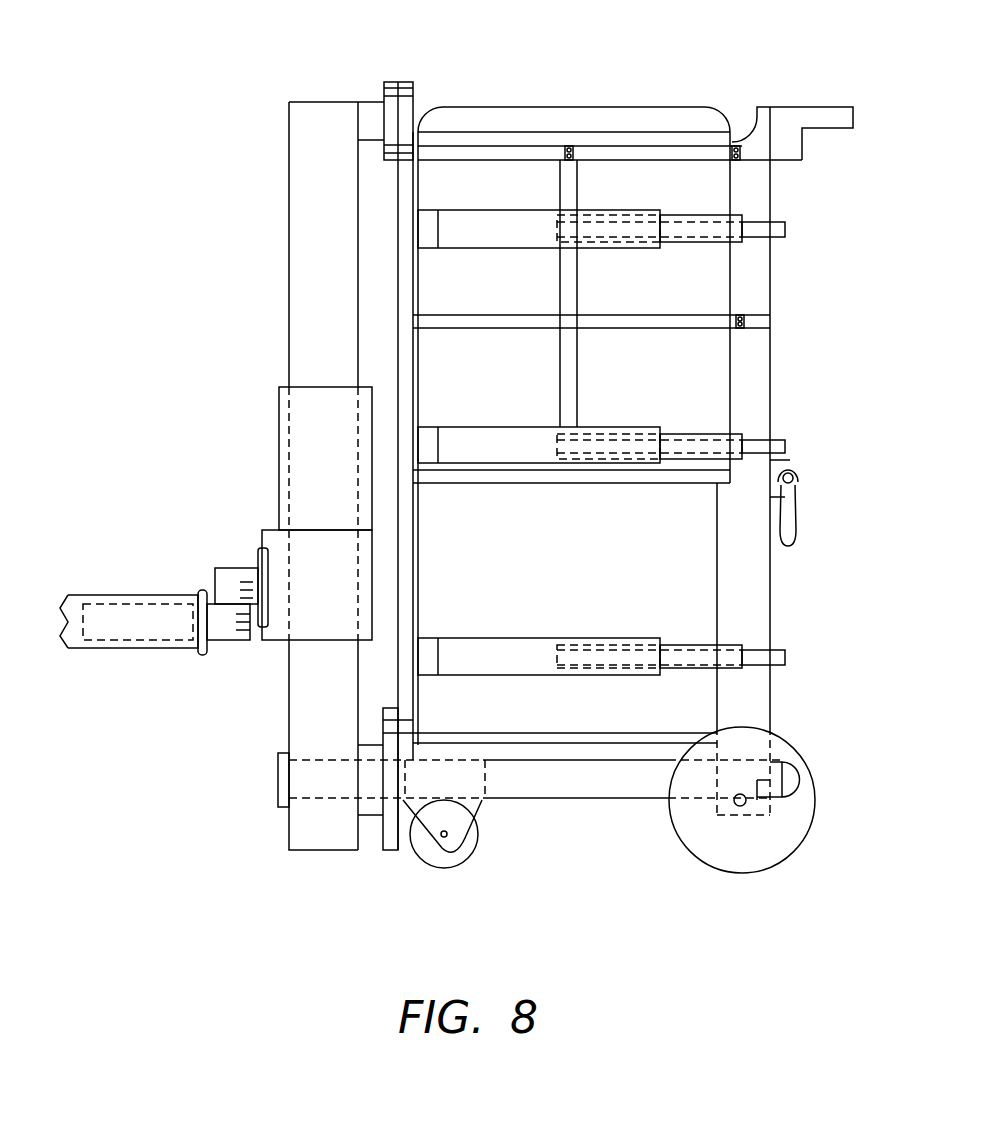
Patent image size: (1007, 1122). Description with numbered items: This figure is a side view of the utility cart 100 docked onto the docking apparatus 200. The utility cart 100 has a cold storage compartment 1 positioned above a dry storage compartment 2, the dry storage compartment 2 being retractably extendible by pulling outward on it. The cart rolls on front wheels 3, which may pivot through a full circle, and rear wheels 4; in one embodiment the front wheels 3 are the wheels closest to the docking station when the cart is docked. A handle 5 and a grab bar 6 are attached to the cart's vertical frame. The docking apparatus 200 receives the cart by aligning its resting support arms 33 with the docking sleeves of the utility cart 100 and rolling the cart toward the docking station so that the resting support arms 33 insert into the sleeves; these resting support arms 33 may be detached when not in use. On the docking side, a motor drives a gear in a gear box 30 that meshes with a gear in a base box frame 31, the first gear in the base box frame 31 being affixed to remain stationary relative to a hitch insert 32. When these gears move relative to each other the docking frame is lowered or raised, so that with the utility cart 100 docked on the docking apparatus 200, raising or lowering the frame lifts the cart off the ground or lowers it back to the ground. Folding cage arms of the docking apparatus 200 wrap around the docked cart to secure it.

The docking apparatus 200 is at (322, 98).
The utility cart 100 is at (537, 105).
The cold storage compartment 1 is at (690, 287).
The dry storage compartment 2 is at (665, 593).
The front wheels 3 is at (467, 843).
The rear wheels 4 is at (732, 853).
The handle 5 is at (788, 117).
The grab bar 6 is at (783, 465).
The gear box 30 is at (317, 407).
The base box frame 31 is at (302, 630).
The hitch insert 32 is at (223, 630).
The resting support arms 33 is at (577, 785).